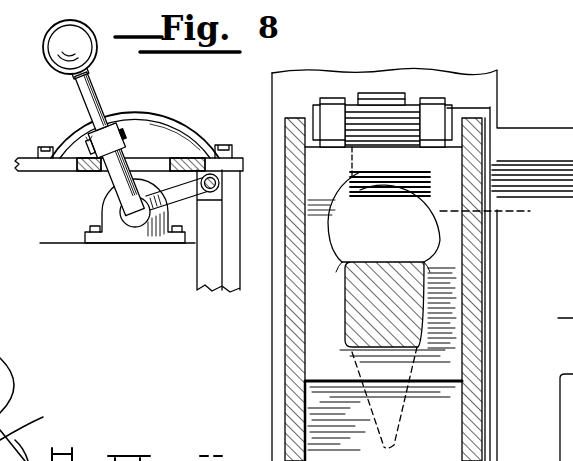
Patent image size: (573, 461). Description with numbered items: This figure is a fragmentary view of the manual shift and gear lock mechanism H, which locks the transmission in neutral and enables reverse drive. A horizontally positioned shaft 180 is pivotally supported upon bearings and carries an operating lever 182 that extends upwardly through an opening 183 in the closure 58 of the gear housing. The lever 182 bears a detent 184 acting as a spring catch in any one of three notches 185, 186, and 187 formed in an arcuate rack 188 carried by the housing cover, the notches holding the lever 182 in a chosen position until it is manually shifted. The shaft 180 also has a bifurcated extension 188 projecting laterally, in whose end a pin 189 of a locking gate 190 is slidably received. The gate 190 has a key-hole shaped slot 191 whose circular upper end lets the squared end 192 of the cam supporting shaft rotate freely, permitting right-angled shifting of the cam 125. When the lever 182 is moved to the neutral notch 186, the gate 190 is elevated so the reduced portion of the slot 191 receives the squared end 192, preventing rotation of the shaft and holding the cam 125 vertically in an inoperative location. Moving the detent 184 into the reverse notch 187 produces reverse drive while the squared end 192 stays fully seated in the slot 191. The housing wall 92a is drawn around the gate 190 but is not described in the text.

The closure 58 is at (38, 170).
The manual shift and gear lock mechanism H is at (118, 185).
The shaft 180 is at (135, 213).
The operating lever 182 is at (98, 88).
The opening 183 is at (172, 160).
The detent 184 is at (150, 122).
The notch 185 is at (178, 128).
The neutral notch 186 is at (141, 124).
The reverse notch 187 is at (88, 126).
The arcuate rack 188 is at (175, 201).
The pin 189 is at (218, 182).
The locking gate 190 is at (440, 250).
The slot 191 is at (437, 300).
The squared end 192 is at (430, 322).
The valve housing wall 92a is at (290, 316).
The cam 125 is at (402, 422).